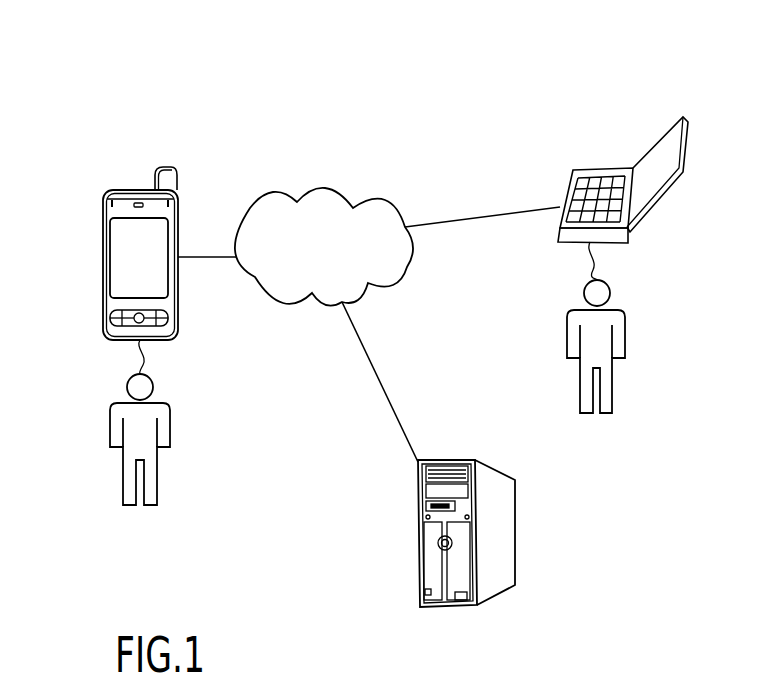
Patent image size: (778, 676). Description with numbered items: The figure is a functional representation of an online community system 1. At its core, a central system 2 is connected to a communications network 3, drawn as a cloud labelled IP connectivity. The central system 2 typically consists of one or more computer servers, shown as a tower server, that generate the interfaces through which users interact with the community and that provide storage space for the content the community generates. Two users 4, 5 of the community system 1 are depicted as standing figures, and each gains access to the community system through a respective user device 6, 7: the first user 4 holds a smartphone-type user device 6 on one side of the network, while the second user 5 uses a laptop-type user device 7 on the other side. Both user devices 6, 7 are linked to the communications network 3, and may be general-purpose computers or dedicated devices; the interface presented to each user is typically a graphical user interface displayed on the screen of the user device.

The online community system 1 is at (577, 115).
The central system 2 is at (515, 522).
The communications network 3 is at (322, 190).
The user 4 is at (110, 418).
The user 5 is at (625, 332).
The user device 6 is at (100, 257).
The user device 7 is at (658, 197).